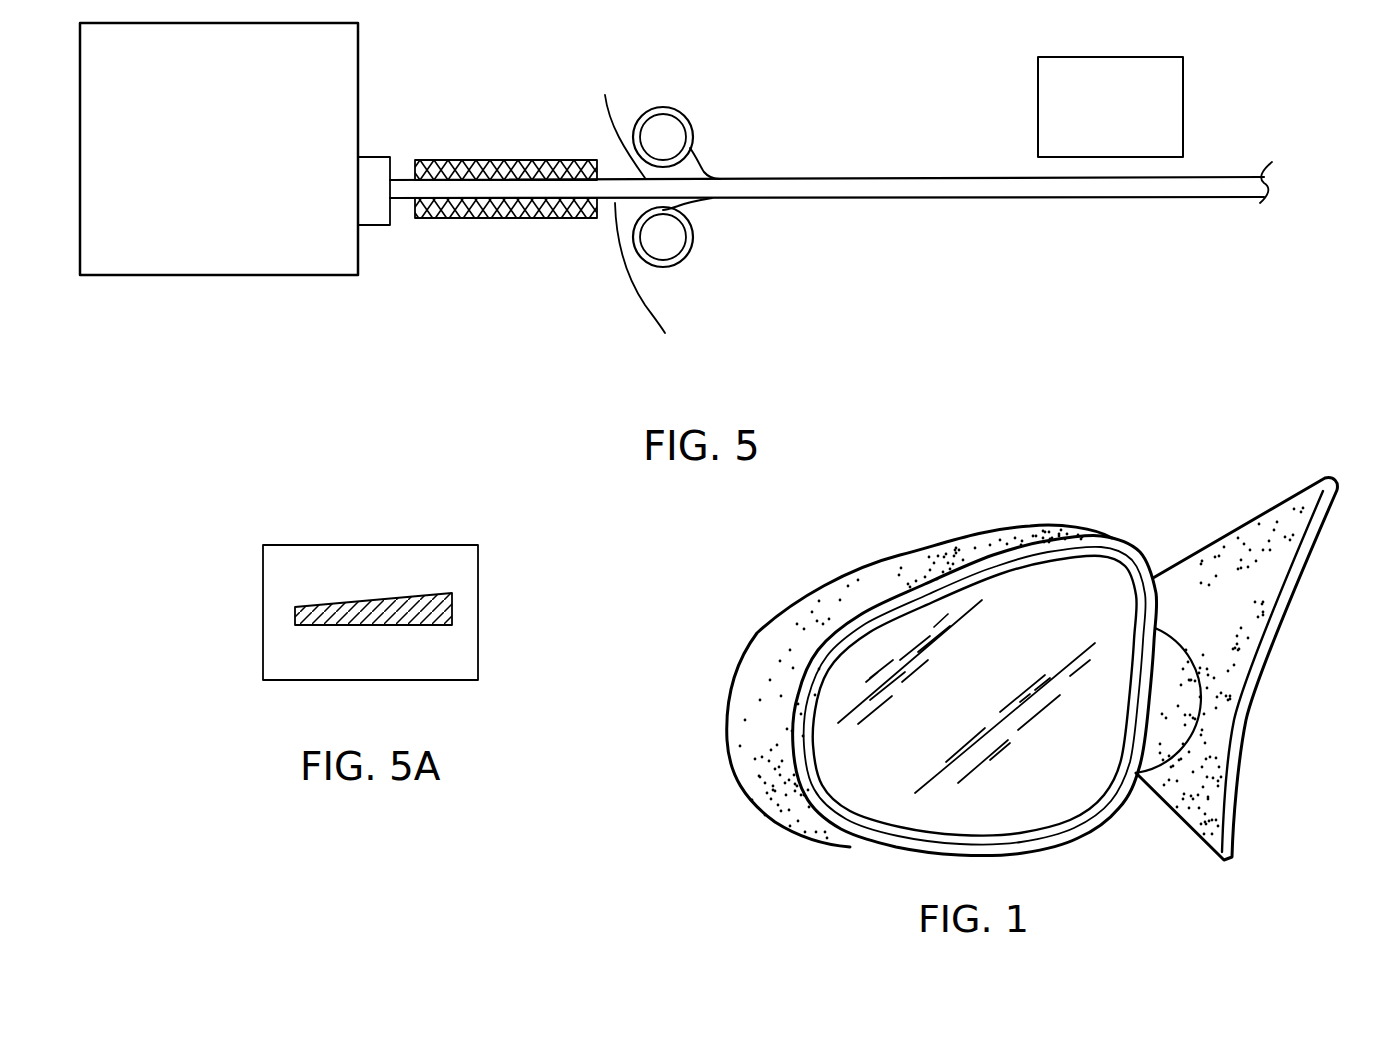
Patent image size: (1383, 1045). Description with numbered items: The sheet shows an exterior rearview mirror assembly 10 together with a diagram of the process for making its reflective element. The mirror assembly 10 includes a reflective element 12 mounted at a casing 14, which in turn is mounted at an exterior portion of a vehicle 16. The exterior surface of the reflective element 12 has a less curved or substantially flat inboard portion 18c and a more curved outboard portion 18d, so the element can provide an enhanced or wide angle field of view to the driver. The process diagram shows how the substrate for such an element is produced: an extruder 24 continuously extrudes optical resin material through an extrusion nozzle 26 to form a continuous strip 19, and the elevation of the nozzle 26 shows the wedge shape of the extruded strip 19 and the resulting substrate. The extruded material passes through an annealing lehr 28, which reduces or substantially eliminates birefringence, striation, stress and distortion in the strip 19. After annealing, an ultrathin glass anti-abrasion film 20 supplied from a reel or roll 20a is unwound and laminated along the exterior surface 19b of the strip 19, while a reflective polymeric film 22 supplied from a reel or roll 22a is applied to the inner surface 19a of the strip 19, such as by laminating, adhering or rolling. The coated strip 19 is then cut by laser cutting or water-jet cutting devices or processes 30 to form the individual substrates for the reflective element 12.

In FIG. 1, the exterior rearview mirror assembly 10 is at (1164, 493).
In FIG. 1, the reflective element 12 is at (980, 645).
In FIG. 1, the casing 14 is at (1061, 522).
In FIG. 1, the vehicle 16 is at (1308, 445).
In FIG. 1, the inboard portion or surface 18c is at (1077, 772).
In FIG. 1, the outboard portion or surface 18d is at (848, 787).
In FIG. 5, the continuous strip or sheet 19 is at (643, 192).
In FIG. 5A, the continuous strip or sheet 19 is at (427, 602).
In FIG. 5, the inner surface of strip 19a is at (662, 288).
In FIG. 5, the exterior surface of strip 19b is at (615, 117).
In FIG. 5, the anti-abrasion coating or layer or film 20 is at (700, 150).
In FIG. 5, the reel or roll form or strip of anti-abrasion film 20a is at (663, 127).
In FIG. 5, the reflective coating or layer 22 is at (690, 203).
In FIG. 5, the reel or roll form or strip of reflective film 22a is at (667, 252).
In FIG. 5, the extruder 24 is at (182, 225).
In FIG. 5, the extrusion nozzle 26 is at (385, 205).
In FIG. 5A, the extrusion nozzle 26 is at (389, 554).
In FIG. 5, the annealing lehr 28 is at (597, 215).
In FIG. 5, the cutting devices or processes 30 is at (1032, 82).